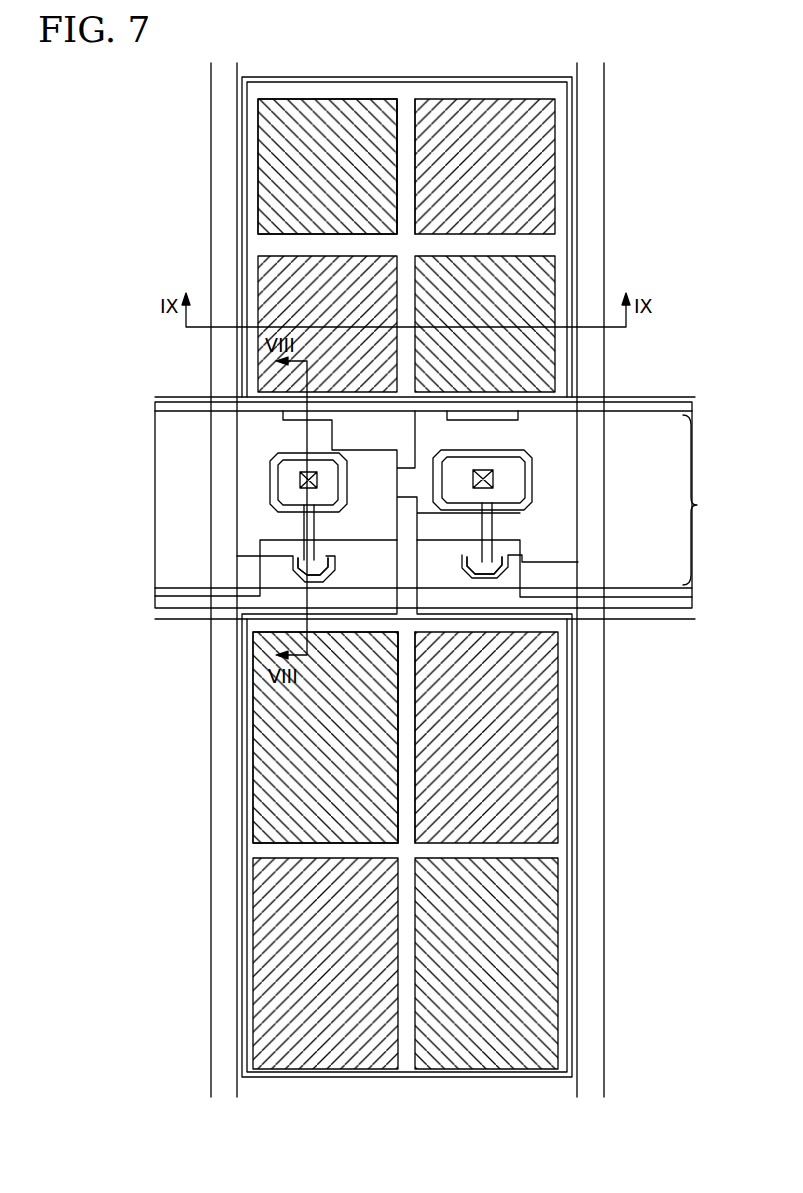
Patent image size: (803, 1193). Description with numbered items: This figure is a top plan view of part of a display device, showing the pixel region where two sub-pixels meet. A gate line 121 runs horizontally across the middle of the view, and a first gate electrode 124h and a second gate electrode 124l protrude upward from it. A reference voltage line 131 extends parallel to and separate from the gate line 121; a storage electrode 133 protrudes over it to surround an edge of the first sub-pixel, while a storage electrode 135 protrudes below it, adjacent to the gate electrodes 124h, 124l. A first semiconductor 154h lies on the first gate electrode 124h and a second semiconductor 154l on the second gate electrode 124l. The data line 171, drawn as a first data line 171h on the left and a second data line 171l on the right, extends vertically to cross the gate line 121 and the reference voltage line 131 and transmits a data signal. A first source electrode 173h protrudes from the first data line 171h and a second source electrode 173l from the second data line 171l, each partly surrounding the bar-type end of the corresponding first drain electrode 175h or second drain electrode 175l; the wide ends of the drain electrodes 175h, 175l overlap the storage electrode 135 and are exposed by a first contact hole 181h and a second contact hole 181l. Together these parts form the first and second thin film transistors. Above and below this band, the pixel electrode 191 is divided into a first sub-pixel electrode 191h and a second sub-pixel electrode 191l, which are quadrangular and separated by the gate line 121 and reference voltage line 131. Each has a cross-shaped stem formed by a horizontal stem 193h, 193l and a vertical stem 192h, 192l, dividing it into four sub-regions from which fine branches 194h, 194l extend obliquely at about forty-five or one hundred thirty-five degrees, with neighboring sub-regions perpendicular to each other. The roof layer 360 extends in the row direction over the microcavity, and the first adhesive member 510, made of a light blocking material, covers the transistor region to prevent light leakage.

The gate line 121 is at (665, 620).
The first gate electrode 124h is at (260, 546).
The second gate electrode 124l is at (520, 545).
The reference voltage line 131 is at (655, 398).
The storage electrode 133 is at (567, 163).
The storage electrode 135 is at (520, 432).
The first semiconductor 154h is at (321, 556).
The second semiconductor 154l is at (472, 547).
The data line 171 is at (683, 1030).
The first data line 171h is at (211, 152).
The second data line 171l is at (604, 265).
The first source electrode 173h is at (303, 584).
The second source electrode 173l is at (487, 583).
The first drain electrode 175h is at (303, 523).
The second drain electrode 175l is at (493, 527).
The first contact hole 181h is at (268, 474).
The second contact hole 181l is at (493, 477).
The pixel electrode 191 is at (138, 1030).
The first sub-pixel electrode 191h is at (407, 554).
The second sub-pixel electrode 191l is at (406, 870).
The vertical stem 192h is at (405, 120).
The vertical stem 192l is at (408, 1033).
The horizontal stem 193h is at (500, 245).
The horizontal stem 193l is at (500, 840).
The fine branches 194h is at (297, 207).
The fine branches 194l is at (297, 808).
The roof layer 360 is at (709, 500).
The first adhesive member 510 is at (188, 404).